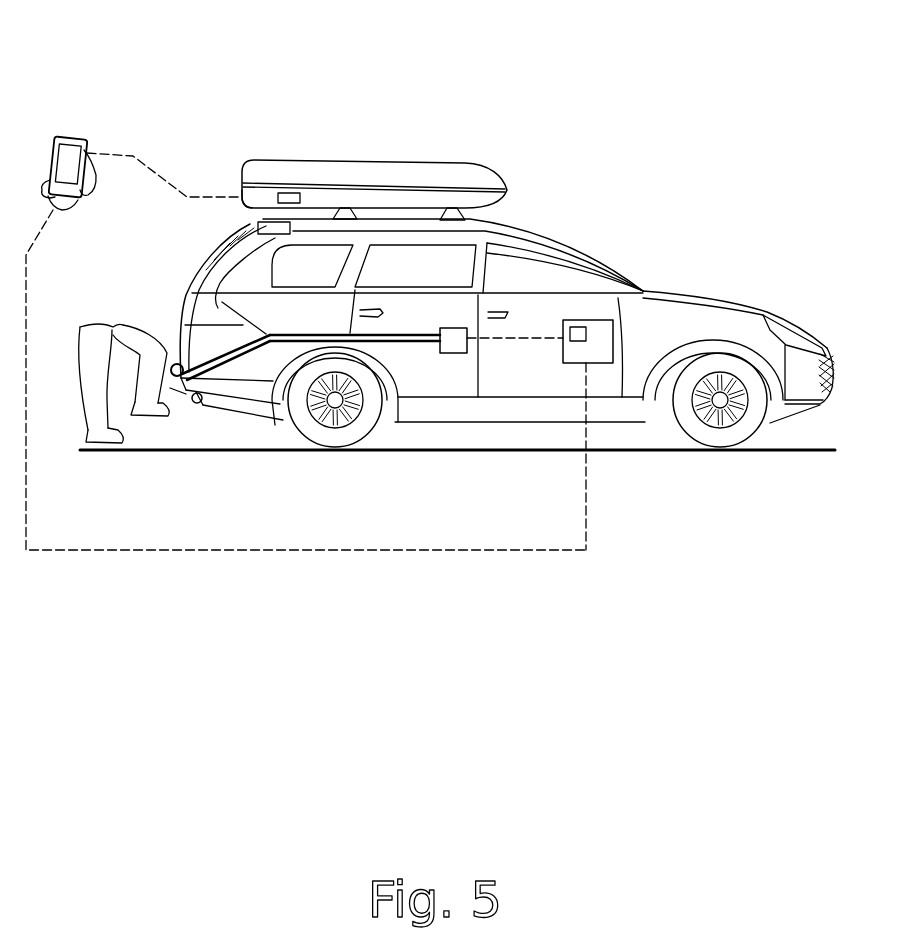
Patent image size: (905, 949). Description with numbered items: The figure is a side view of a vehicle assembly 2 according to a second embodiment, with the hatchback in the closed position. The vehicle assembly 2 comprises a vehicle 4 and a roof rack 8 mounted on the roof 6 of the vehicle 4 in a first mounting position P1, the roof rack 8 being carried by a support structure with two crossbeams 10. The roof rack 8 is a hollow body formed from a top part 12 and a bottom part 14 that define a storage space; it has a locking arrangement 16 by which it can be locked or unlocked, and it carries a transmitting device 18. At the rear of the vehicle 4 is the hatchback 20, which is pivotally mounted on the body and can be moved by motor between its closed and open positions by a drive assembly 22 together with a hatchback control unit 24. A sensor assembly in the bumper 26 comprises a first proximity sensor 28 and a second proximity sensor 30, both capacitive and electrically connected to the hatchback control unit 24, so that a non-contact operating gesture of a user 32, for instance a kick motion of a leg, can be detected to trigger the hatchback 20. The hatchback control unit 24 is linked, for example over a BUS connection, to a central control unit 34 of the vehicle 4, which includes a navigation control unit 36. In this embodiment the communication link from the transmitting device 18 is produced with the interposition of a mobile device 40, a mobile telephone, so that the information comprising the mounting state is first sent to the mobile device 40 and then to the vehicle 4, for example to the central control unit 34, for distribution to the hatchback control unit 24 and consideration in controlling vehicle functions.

The vehicle assembly 2 is at (664, 112).
The vehicle 4 is at (723, 290).
The roof 6 is at (512, 223).
The roof rack 8 is at (357, 167).
The crossbeams 10 is at (457, 214).
The top part 12 is at (258, 168).
The bottom part 14 is at (240, 196).
The locking arrangement 16 is at (377, 208).
The transmitting device 18 is at (296, 193).
The hatchback 20 is at (202, 278).
The drive assembly 22 is at (258, 227).
The hatchback control unit 24 is at (455, 328).
The bumper 26 is at (176, 393).
The first proximity sensor 28 is at (177, 363).
The second proximity sensor 30 is at (200, 402).
The user 32 is at (88, 349).
The central control unit 34 is at (595, 353).
The navigation control unit 36 is at (577, 338).
The mobile device 40 is at (57, 136).
The first mounting position P1 is at (292, 158).